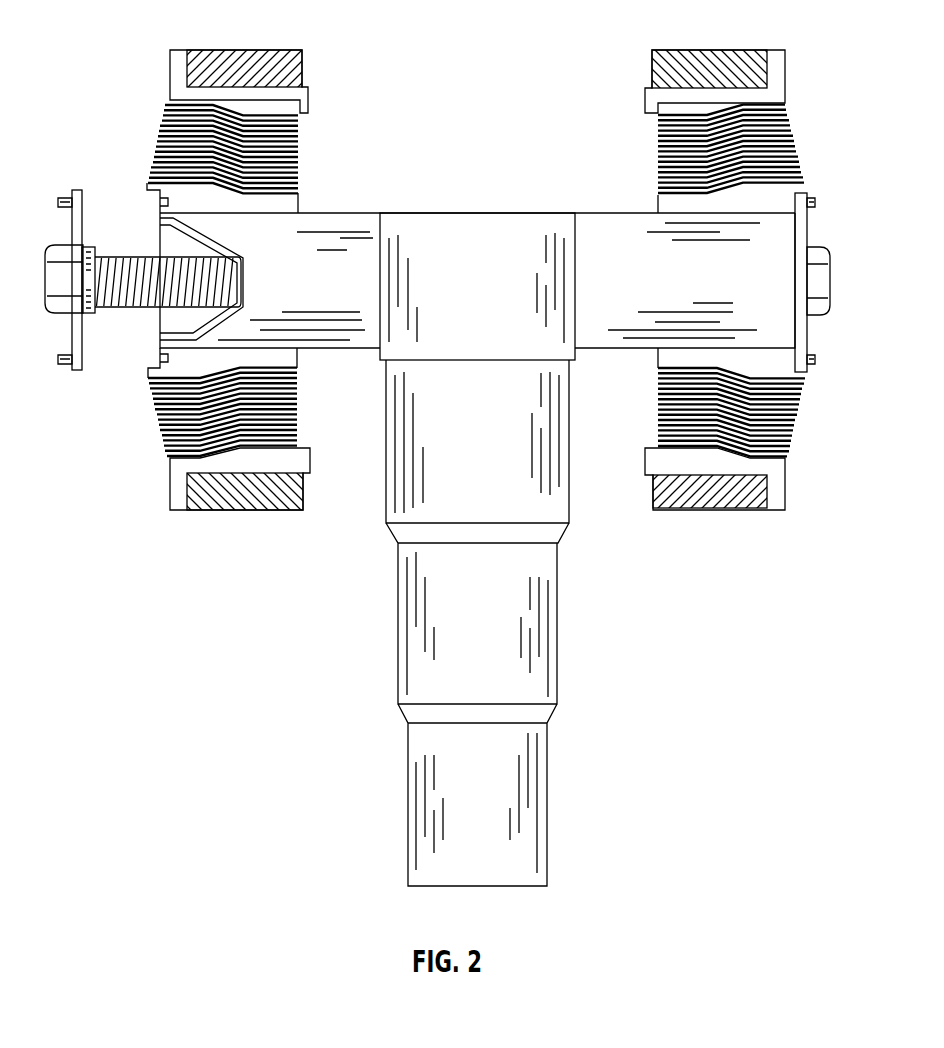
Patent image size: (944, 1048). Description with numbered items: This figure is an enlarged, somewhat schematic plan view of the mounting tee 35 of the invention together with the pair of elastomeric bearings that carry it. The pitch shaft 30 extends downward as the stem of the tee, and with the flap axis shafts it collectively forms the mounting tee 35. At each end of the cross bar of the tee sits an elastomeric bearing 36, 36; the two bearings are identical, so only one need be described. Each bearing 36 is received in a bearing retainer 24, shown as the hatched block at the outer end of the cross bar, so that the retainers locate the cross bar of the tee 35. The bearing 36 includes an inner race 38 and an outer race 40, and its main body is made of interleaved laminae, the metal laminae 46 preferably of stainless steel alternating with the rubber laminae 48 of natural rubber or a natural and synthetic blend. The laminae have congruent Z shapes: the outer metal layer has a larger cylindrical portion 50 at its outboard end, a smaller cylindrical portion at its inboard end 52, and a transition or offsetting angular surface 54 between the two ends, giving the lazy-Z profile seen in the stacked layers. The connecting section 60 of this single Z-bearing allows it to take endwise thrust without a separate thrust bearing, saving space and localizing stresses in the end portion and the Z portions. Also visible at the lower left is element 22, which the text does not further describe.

The first mounting block 22 is at (233, 500).
The bearing retainer 24 is at (727, 502).
The pitch shaft 30 is at (569, 774).
The mounting tee 35 is at (458, 202).
The elastomeric bearing 36 is at (241, 96).
The inner race 38 is at (150, 180).
The outer race 40 is at (273, 59).
The metal laminae 46 is at (298, 145).
The rubber laminae 48 is at (298, 182).
The cylindrical portion 50 is at (167, 107).
The inboard end 52 is at (263, 97).
The transition or offsetting angular surface 54 is at (226, 96).
The connecting section 60 is at (227, 187).